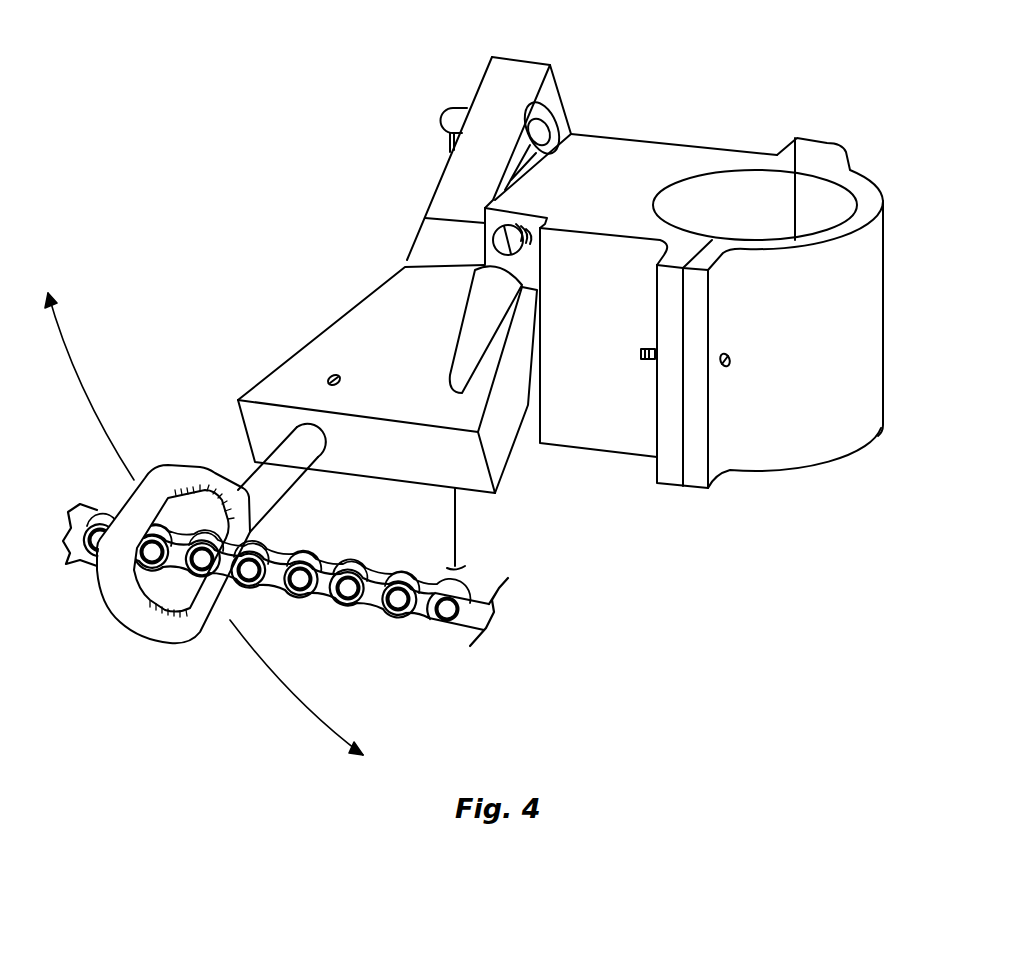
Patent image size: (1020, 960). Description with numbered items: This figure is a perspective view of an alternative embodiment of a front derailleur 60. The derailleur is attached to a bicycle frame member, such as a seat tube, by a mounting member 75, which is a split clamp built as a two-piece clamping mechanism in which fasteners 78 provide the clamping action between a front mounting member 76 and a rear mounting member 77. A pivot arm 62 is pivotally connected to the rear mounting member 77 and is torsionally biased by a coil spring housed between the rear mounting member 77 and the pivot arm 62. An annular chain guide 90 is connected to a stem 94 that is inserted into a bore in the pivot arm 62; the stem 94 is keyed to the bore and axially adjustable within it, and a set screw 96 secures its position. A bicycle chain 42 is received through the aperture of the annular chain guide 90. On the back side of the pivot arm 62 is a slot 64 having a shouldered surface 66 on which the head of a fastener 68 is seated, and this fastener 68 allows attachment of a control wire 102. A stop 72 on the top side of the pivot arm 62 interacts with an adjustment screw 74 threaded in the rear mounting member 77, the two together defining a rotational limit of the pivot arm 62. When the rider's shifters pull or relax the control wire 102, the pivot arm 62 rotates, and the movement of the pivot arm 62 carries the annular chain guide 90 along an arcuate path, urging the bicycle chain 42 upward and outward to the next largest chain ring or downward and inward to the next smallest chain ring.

The front derailleur 60 is at (332, 137).
The pivot arm 62 is at (505, 492).
The slot 64 is at (558, 106).
The shouldered surface 66 is at (518, 172).
The fastener 68 is at (445, 110).
The stop 72 is at (480, 287).
The adjustment screw 74 is at (493, 227).
The mounting member 75 is at (668, 487).
The front mounting member 76 is at (793, 468).
The rear mounting member 77 is at (570, 452).
The fasteners 78 is at (728, 360).
The annular chain guide 90 is at (172, 482).
The stem 94 is at (252, 535).
The set screw 96 is at (330, 375).
The control wire 102 is at (453, 507).
The bicycle chain 42 is at (422, 623).